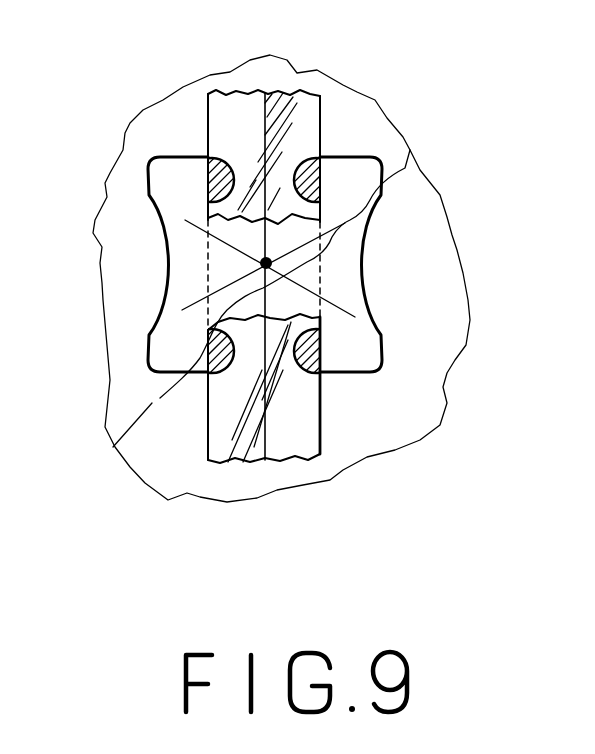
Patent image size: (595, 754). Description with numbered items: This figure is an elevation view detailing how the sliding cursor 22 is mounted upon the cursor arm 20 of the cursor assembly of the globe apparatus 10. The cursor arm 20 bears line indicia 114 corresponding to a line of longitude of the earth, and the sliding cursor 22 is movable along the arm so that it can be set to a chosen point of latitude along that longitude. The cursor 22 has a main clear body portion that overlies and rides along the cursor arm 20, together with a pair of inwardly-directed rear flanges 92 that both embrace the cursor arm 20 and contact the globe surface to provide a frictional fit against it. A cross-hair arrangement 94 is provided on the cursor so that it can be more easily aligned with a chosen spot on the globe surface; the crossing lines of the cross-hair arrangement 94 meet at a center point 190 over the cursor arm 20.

The globe apparatus 10 is at (200, 26).
The cursor arm 20 is at (303, 423).
The sliding cursor 22 is at (363, 121).
The rear flanges 92 is at (230, 158).
The cross-hair arrangement 94 is at (323, 252).
The line indicia 114 is at (258, 112).
The twist point 190 is at (215, 263).